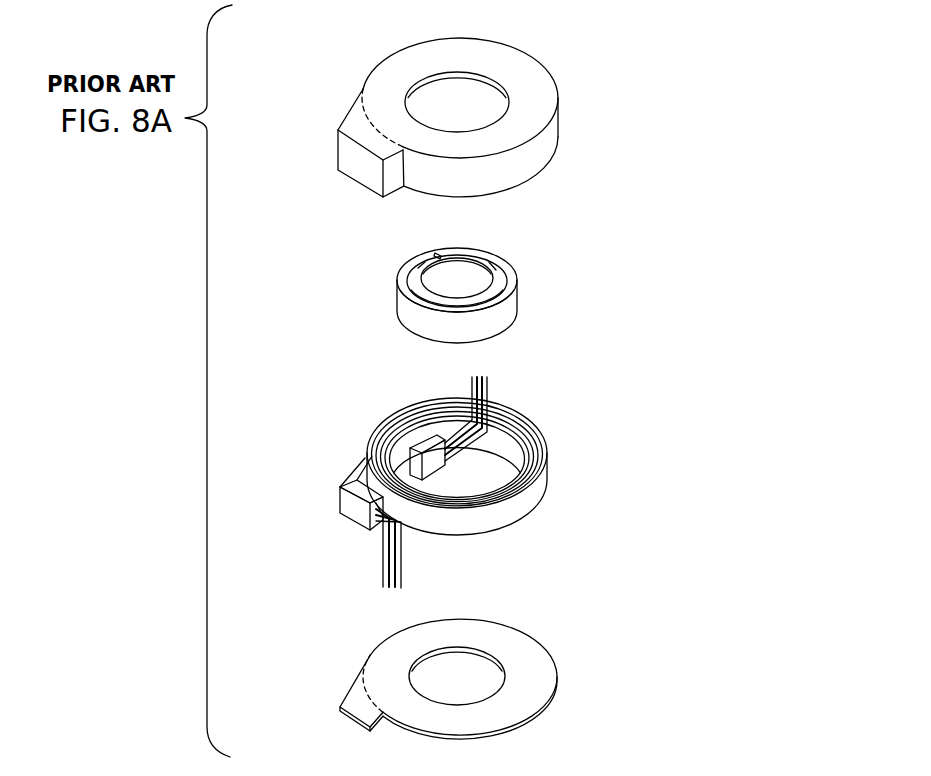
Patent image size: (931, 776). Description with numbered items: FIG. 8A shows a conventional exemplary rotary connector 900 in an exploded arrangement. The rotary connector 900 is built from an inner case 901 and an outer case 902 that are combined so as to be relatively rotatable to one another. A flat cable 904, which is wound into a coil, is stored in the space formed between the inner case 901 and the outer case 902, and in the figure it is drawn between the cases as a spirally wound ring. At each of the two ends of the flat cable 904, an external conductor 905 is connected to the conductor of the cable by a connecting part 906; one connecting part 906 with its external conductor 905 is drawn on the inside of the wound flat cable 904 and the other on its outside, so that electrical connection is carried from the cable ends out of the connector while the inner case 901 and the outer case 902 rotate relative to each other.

The rotary connector 900 is at (686, 120).
The inner case 901 is at (507, 310).
The outer case 902 is at (542, 92).
The flat cable 904 is at (537, 485).
The external conductor 905 is at (490, 396).
The connecting part 906 is at (440, 444).